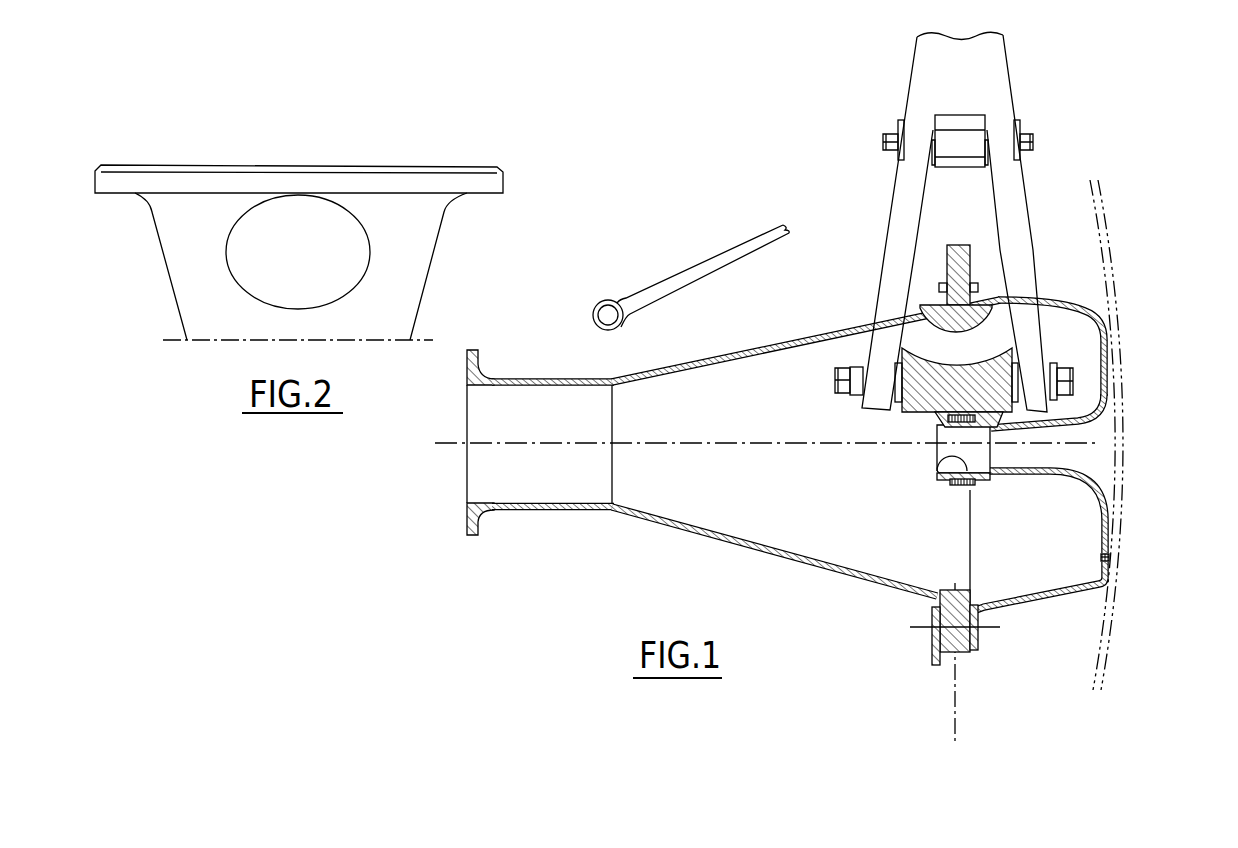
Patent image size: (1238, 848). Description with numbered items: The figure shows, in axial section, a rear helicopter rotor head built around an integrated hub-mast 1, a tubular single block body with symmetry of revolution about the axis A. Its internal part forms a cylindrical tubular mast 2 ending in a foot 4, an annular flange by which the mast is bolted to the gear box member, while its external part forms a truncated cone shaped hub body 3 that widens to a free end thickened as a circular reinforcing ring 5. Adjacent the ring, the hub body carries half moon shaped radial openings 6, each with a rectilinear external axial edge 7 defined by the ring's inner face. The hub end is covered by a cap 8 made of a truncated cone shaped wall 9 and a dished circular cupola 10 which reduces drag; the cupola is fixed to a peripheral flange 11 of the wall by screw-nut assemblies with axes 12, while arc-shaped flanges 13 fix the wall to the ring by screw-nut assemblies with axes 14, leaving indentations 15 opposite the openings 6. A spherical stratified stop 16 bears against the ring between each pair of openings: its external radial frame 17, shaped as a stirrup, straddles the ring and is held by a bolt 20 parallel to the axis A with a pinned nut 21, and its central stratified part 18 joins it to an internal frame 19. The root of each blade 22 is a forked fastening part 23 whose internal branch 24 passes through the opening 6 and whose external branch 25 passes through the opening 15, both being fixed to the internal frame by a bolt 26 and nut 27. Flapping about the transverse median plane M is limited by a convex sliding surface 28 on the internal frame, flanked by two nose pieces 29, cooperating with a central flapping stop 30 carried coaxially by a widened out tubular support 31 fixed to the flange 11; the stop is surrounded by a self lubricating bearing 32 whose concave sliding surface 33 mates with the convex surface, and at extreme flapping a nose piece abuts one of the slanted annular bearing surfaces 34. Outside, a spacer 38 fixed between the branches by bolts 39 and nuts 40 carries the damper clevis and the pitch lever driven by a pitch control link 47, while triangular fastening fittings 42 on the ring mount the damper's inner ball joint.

In FIG. 1, the integrated hub-mast 1 is at (738, 549).
In FIG. 1, the tubular mast 2 is at (552, 512).
In FIG. 2, the tubular hub body 3 is at (418, 258).
In FIG. 1, the tubular hub body 3 is at (815, 563).
In FIG. 1, the foot 4 is at (478, 531).
In FIG. 2, the circular reinforcing ring 5 is at (489, 194).
In FIG. 1, the circular reinforcing ring 5 is at (936, 632).
In FIG. 2, the radial opening 6 is at (273, 222).
In FIG. 1, the radial opening 6 is at (848, 318).
In FIG. 2, the external axial edge 7 is at (312, 195).
In FIG. 1, the cap 8 is at (1083, 614).
In FIG. 1, the truncated cone shaped wall 9 is at (1029, 597).
In FIG. 1, the circular cupola 10 is at (1105, 674).
In FIG. 1, the peripheral flange 11 is at (1109, 560).
In FIG. 1, the screw-nut assembly axes 12 is at (1113, 568).
In FIG. 1, the flange 13 is at (980, 623).
In FIG. 1, the screw-nut assembly axes 14 is at (998, 633).
In FIG. 1, the indentation / external radial opening 15 is at (1050, 298).
In FIG. 1, the spherical stratified stop 16 is at (1014, 328).
In FIG. 1, the external radial frame 17 is at (1006, 303).
In FIG. 1, the central stratified part 18 is at (910, 330).
In FIG. 1, the internal frame 19 is at (903, 349).
In FIG. 1, the bolt 20 is at (984, 262).
In FIG. 1, the nut 21 is at (930, 262).
In FIG. 1, the blade 22 is at (986, 49).
In FIG. 1, the forked fastening part 23 is at (1047, 262).
In FIG. 1, the internal branch 24 is at (903, 177).
In FIG. 1, the external branch 25 is at (1020, 211).
In FIG. 1, the bolt 26 is at (1069, 386).
In FIG. 1, the nut 27 is at (843, 400).
In FIG. 1, the sliding surface 28 is at (940, 413).
In FIG. 1, the nose piece 29 is at (1015, 429).
In FIG. 1, the central flapping stop 30 is at (957, 498).
In FIG. 1, the widened out tubular support 31 is at (1083, 498).
In FIG. 1, the self lubricating bearing 32 is at (938, 459).
In FIG. 1, the concave sliding surface 33 is at (979, 481).
In FIG. 1, the slanted annular bearing surface 34 is at (940, 478).
In FIG. 1, the spacer 38 is at (966, 129).
In FIG. 1, the bolt 39 is at (1036, 143).
In FIG. 1, the nut 40 is at (894, 134).
In FIG. 1, the fastening fitting 42 is at (932, 615).
In FIG. 1, the pitch control link 47 is at (745, 243).
In FIG. 1, the axis A is at (731, 446).
In FIG. 1, the transverse median plane M is at (955, 697).